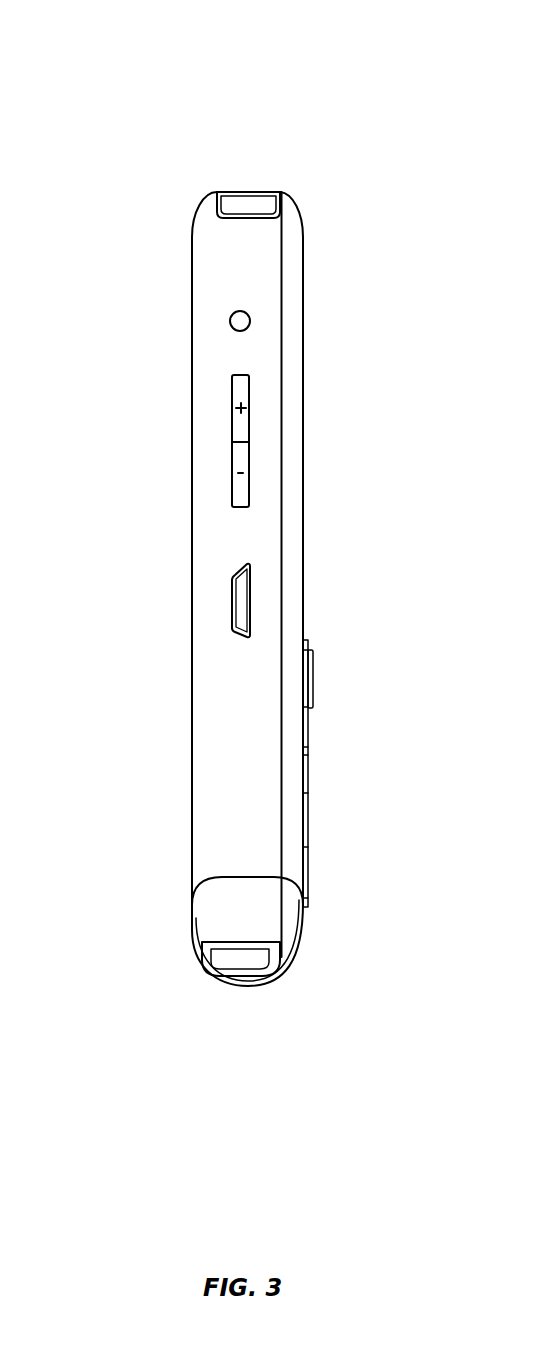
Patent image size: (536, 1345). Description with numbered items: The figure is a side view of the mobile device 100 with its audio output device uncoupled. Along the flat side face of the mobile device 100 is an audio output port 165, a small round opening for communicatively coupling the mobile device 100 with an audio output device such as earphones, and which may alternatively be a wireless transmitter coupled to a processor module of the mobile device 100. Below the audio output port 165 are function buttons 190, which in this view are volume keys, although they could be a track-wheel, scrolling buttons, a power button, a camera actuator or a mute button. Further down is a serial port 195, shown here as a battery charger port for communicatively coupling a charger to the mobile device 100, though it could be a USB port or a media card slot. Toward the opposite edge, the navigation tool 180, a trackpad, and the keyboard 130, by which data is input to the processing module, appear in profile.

The mobile device 100 is at (113, 52).
The keyboard 130 is at (310, 765).
The audio output port 165 is at (233, 315).
The navigation tool 180 is at (313, 672).
The function buttons 190 is at (232, 425).
The serial port 195 is at (231, 598).